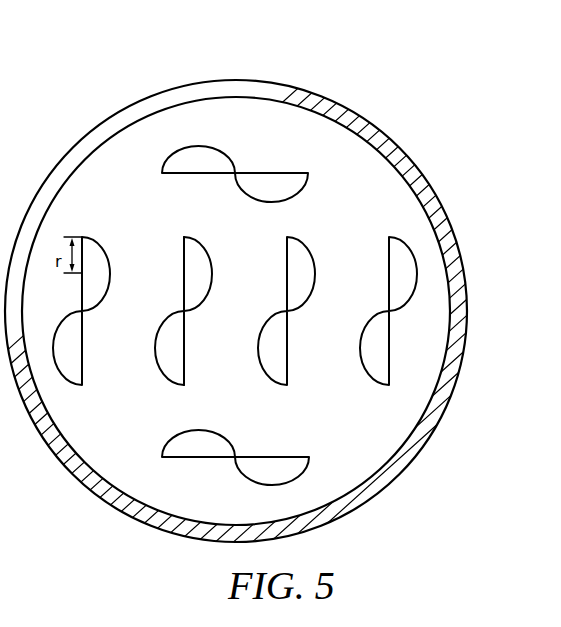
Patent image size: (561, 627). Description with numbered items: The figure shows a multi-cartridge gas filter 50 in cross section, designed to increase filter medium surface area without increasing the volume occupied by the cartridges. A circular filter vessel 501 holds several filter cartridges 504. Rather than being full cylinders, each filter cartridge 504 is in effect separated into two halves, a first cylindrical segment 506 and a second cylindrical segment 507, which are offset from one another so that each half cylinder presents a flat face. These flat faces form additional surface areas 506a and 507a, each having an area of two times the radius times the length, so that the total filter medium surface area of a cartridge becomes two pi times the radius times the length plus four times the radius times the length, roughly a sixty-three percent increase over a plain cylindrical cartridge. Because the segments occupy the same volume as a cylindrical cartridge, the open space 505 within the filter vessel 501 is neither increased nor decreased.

The gas filter 50 is at (112, 39).
The filter vessel 501 is at (401, 149).
The filter cartridge 504 is at (97, 236).
The open space 505 is at (448, 335).
The cylindrical segment 506 is at (174, 245).
The additional surface area 506a is at (186, 277).
The cylindrical segment 507 is at (168, 312).
The additional surface area 507a is at (185, 342).